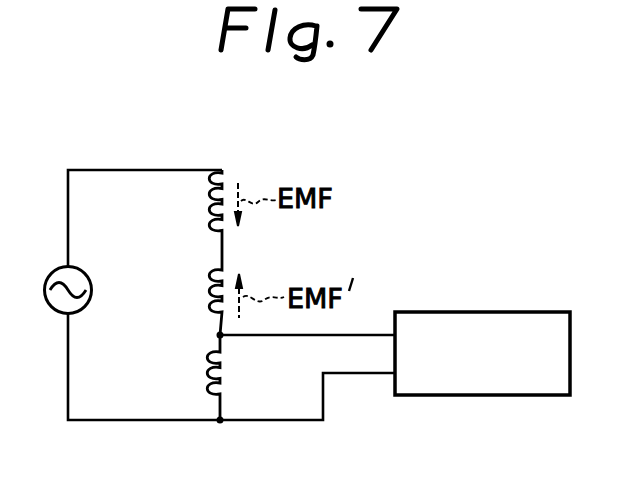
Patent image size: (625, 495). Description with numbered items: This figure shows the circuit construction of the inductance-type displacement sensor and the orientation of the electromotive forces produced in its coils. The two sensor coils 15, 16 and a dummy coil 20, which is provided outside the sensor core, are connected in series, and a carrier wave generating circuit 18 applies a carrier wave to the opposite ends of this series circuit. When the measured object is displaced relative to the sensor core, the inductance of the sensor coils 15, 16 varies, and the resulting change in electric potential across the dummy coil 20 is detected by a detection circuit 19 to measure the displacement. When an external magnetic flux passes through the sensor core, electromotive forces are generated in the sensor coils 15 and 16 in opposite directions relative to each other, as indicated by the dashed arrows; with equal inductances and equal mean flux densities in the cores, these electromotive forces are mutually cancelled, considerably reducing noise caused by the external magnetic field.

The sensor coil 15 is at (224, 171).
The sensor coil 16 is at (223, 266).
The carrier wave generating circuit 18 is at (54, 273).
The detection circuit 19 is at (511, 312).
The dummy coil 20 is at (222, 406).